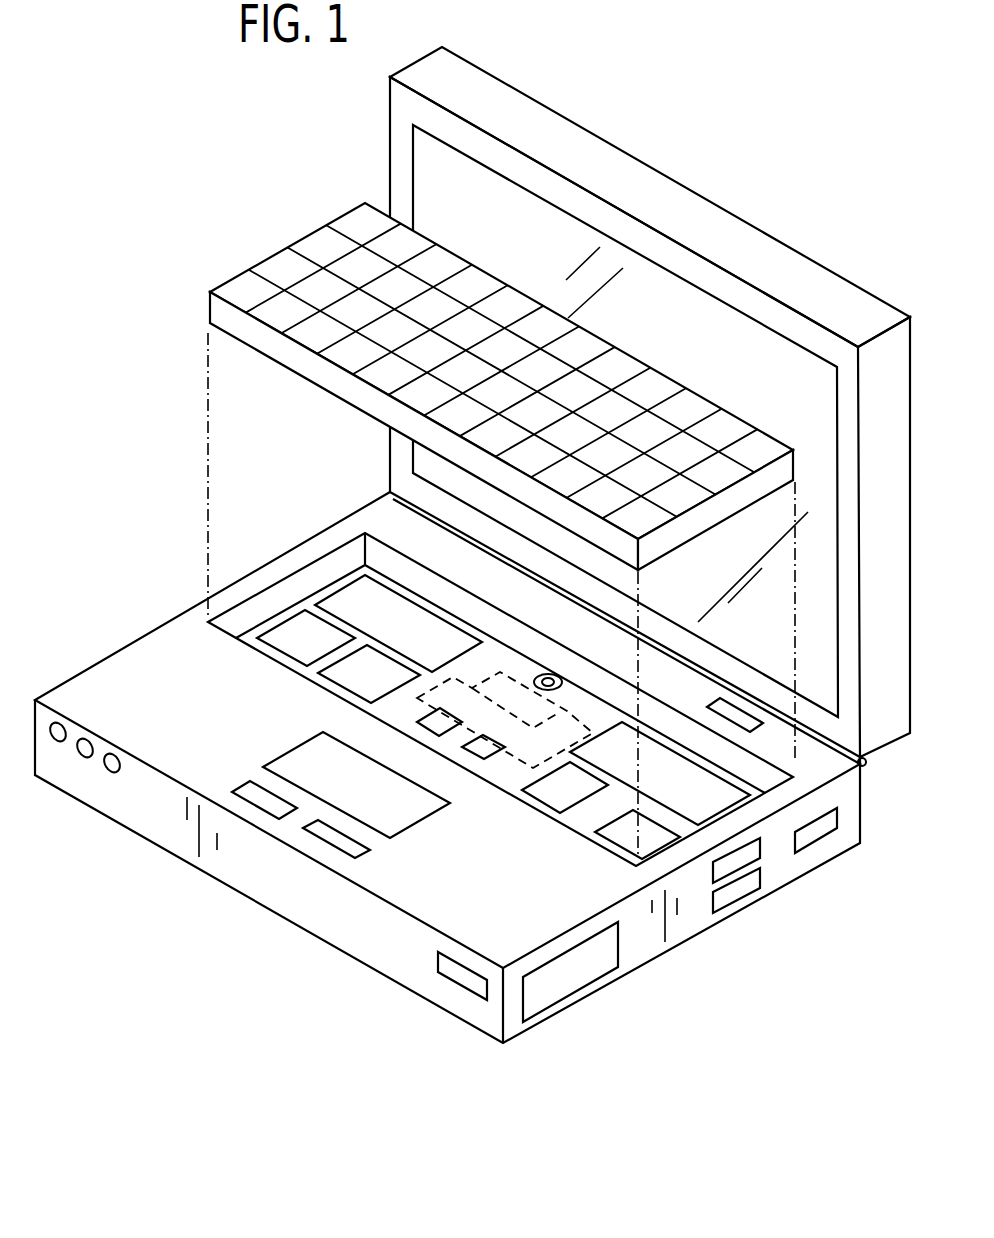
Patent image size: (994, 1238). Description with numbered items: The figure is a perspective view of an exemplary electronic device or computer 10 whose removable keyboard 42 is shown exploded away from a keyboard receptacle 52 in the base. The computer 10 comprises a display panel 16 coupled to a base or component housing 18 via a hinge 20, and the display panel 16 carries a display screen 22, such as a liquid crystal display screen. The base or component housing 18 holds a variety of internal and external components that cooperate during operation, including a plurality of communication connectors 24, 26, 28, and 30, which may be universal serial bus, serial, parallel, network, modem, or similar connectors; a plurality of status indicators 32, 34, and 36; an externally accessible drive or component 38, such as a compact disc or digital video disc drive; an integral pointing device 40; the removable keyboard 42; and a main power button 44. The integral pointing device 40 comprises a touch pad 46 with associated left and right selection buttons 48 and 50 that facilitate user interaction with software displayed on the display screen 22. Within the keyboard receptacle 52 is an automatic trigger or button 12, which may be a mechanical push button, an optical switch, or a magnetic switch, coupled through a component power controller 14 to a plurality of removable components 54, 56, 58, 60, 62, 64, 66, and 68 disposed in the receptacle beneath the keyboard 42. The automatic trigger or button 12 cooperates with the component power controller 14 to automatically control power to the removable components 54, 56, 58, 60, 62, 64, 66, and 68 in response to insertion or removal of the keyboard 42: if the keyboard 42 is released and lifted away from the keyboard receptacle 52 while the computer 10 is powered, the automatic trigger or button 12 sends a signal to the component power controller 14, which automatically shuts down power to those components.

The computer 10 is at (722, 73).
The automatic trigger or button 12 is at (550, 677).
The component power controller 14 is at (502, 670).
The display panel 16 is at (787, 242).
The base or component housing 18 is at (533, 1042).
The hinge 20 is at (868, 762).
The display screen 22 is at (538, 210).
The communication connector 24 is at (823, 840).
The communication connector 26 is at (740, 872).
The communication connector 28 is at (730, 912).
The communication connector 30 is at (445, 977).
The status indicator 32 is at (55, 742).
The status indicator 34 is at (84, 758).
The status indicator 36 is at (112, 773).
The externally accessible drive or component 38 is at (597, 965).
The integral pointing device 40 is at (230, 733).
The removable keyboard 42 is at (303, 233).
The main power button 44 is at (735, 710).
The touch pad 46 is at (412, 828).
The left selection button 48 is at (255, 805).
The right selection button 50 is at (325, 843).
The keyboard receptacle 52 is at (343, 543).
The removable component 54 is at (338, 587).
The removable component 56 is at (742, 803).
The removable component 58 is at (272, 632).
The removable component 60 is at (345, 695).
The removable component 62 is at (430, 735).
The removable component 64 is at (495, 757).
The removable component 66 is at (543, 803).
The removable component 68 is at (598, 847).